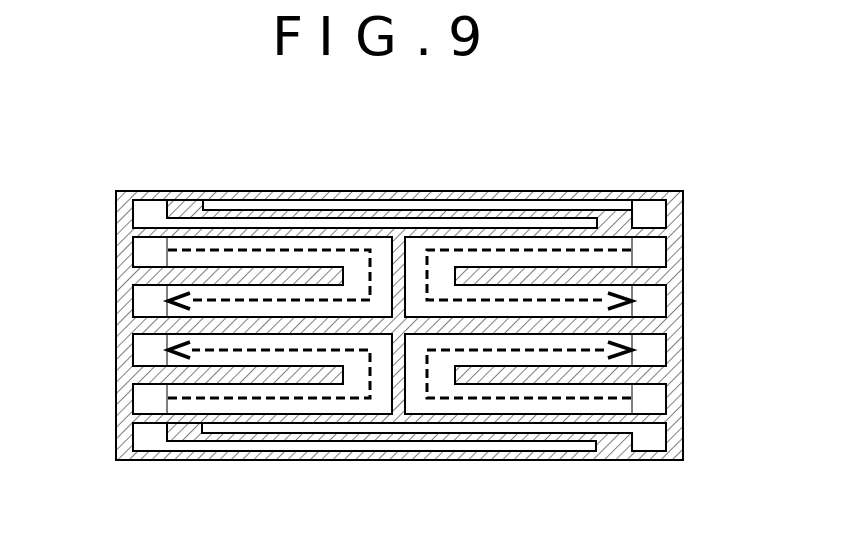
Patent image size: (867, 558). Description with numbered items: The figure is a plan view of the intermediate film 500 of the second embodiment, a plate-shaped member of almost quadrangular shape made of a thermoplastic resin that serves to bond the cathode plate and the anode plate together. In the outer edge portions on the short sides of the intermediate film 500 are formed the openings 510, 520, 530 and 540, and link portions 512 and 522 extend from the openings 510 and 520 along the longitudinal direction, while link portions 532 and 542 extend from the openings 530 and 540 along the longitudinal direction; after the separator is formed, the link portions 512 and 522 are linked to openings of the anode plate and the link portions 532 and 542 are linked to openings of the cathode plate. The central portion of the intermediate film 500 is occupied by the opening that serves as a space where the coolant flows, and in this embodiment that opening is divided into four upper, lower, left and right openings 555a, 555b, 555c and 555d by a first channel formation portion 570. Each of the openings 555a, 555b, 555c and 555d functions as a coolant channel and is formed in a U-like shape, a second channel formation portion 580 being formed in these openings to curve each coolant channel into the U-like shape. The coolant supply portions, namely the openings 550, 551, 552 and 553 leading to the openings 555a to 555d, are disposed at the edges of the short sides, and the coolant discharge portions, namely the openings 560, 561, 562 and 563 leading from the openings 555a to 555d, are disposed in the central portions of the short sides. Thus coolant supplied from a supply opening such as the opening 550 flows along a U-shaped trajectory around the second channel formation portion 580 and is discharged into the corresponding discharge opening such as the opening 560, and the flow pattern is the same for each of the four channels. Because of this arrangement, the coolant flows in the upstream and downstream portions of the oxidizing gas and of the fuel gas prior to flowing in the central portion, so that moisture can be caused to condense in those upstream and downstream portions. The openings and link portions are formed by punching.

The intermediate film 500 is at (684, 212).
The opening 510 is at (149, 205).
The opening 520 is at (648, 445).
The opening 530 is at (148, 445).
The opening 540 is at (647, 207).
The link portion 512 is at (600, 215).
The link portion 522 is at (212, 438).
The link portion 532 is at (562, 445).
The link portion 542 is at (211, 204).
The opening 550 is at (145, 399).
The opening 551 is at (655, 402).
The opening 552 is at (145, 251).
The opening 553 is at (655, 258).
The opening 560 is at (145, 350).
The opening 561 is at (655, 352).
The opening 562 is at (145, 301).
The opening 563 is at (655, 304).
The opening 555a is at (340, 400).
The opening 555b is at (421, 400).
The opening 555c is at (333, 250).
The opening 555d is at (455, 250).
The first channel formation portion 570 is at (400, 237).
The second channel formation portion 580 is at (265, 272).